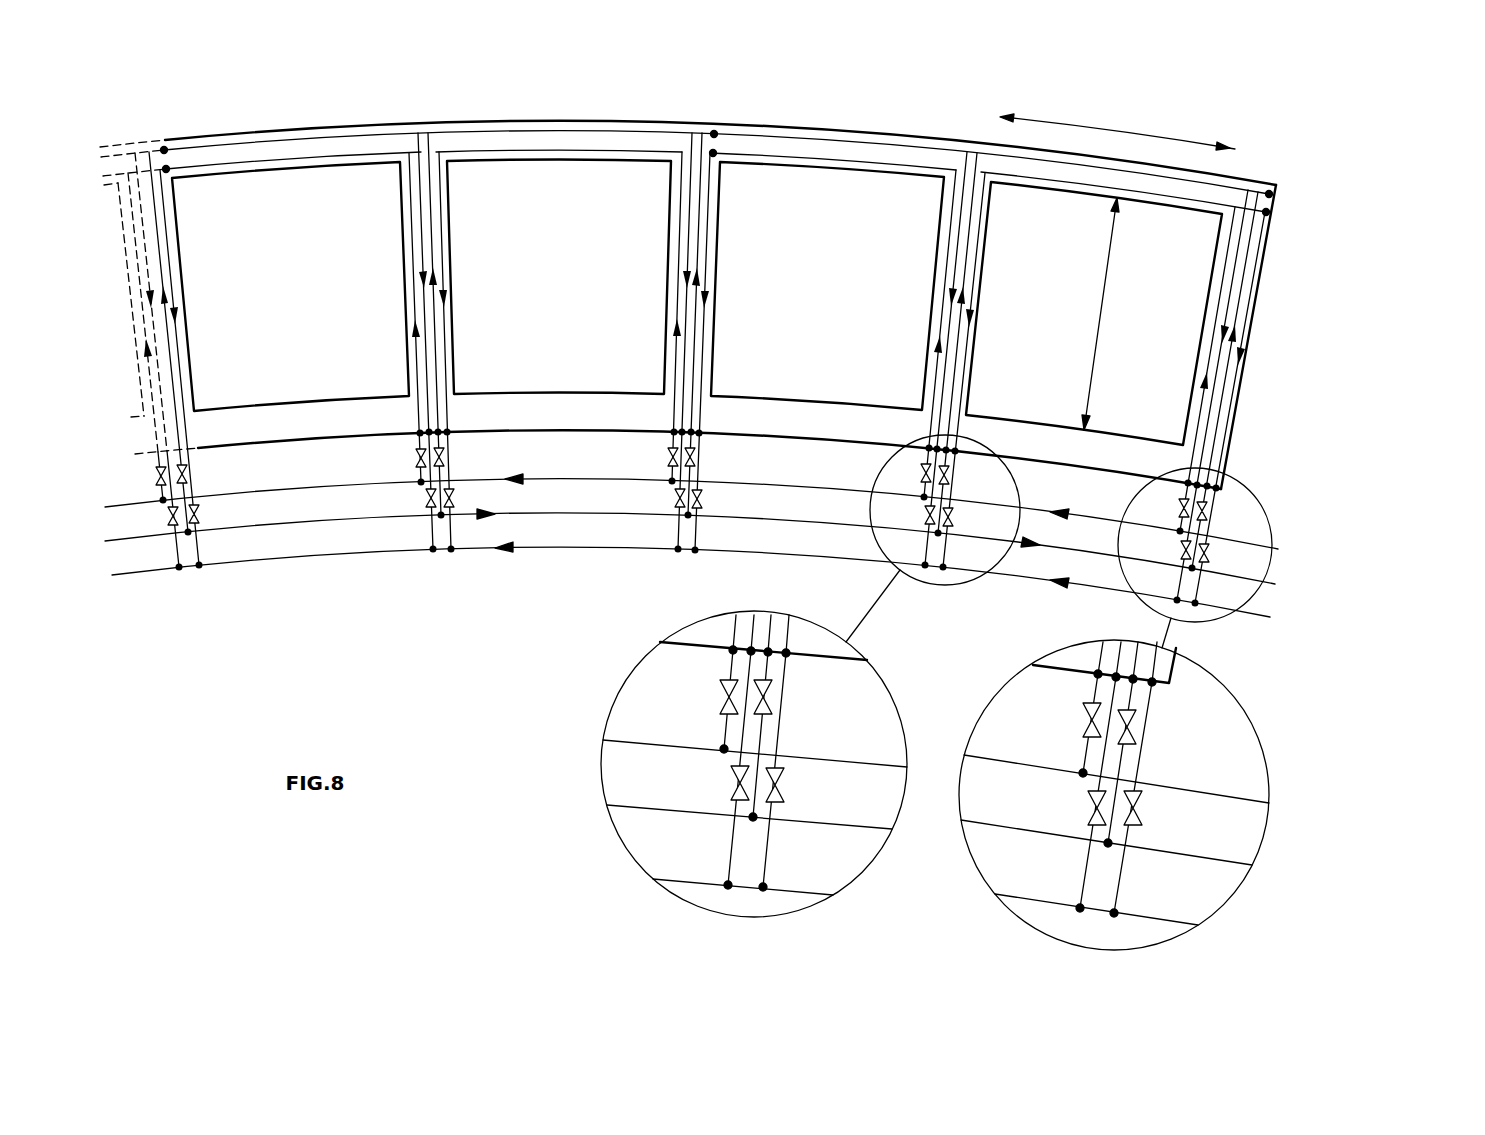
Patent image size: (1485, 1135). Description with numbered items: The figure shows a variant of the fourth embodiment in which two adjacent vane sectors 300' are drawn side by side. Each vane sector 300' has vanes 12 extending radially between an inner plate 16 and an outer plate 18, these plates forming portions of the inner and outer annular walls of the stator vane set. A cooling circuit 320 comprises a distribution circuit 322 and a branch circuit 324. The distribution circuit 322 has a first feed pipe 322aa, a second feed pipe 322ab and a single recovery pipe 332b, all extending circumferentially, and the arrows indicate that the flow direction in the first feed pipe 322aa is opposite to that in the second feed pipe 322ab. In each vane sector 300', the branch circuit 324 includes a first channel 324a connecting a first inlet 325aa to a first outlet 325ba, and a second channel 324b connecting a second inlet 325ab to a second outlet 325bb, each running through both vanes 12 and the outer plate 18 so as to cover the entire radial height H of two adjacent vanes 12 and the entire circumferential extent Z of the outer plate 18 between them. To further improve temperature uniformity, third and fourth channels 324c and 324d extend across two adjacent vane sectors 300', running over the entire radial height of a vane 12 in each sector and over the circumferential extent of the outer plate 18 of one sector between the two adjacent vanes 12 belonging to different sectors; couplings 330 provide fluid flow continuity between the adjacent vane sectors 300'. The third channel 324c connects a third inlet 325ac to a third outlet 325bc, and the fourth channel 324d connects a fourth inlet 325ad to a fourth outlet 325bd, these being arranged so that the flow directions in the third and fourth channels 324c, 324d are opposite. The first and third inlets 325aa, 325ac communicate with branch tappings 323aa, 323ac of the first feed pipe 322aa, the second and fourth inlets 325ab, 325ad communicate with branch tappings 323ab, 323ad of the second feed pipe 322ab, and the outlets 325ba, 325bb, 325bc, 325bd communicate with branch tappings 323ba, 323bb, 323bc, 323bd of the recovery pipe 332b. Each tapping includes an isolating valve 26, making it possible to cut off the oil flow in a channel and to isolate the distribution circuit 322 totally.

The vane sector 300' is at (721, 255).
The coupling 330 is at (165, 169).
The outer plate 18 is at (845, 130).
The inner plate 16 is at (835, 402).
The vane 12 is at (983, 262).
The first channel 324a is at (1200, 388).
The second channel 324b is at (1208, 402).
The third channel 324c is at (1215, 418).
The fourth channel 324d is at (1222, 445).
The branch circuit 324 is at (778, 368).
The cooling circuit 320 is at (788, 381).
The first feed pipe 322aa is at (1258, 545).
The second feed pipe 322ab is at (1258, 579).
The return line 332b is at (1250, 613).
The distribution circuit 322 is at (756, 550).
The isolating valve 26 is at (720, 709).
The fourth inlet 325ad is at (733, 653).
The third outlet 325bc is at (751, 651).
The second inlet 325ab is at (768, 652).
The first outlet 325ba is at (786, 655).
The connecting line 323ad is at (724, 751).
The branch tapping 323bc is at (728, 883).
The branch tapping 323ab is at (753, 820).
The branch tapping 323ba is at (763, 885).
The first inlet 325aa is at (1098, 676).
The second outlet 325bb is at (1116, 675).
The third inlet 325ac is at (1134, 677).
The fourth outlet 325bd is at (1152, 684).
The branch tapping 323aa is at (1083, 775).
The branch tapping 323bb is at (1080, 910).
The branch tapping 323ac is at (1108, 845).
The branch tapping 323bd is at (1114, 911).